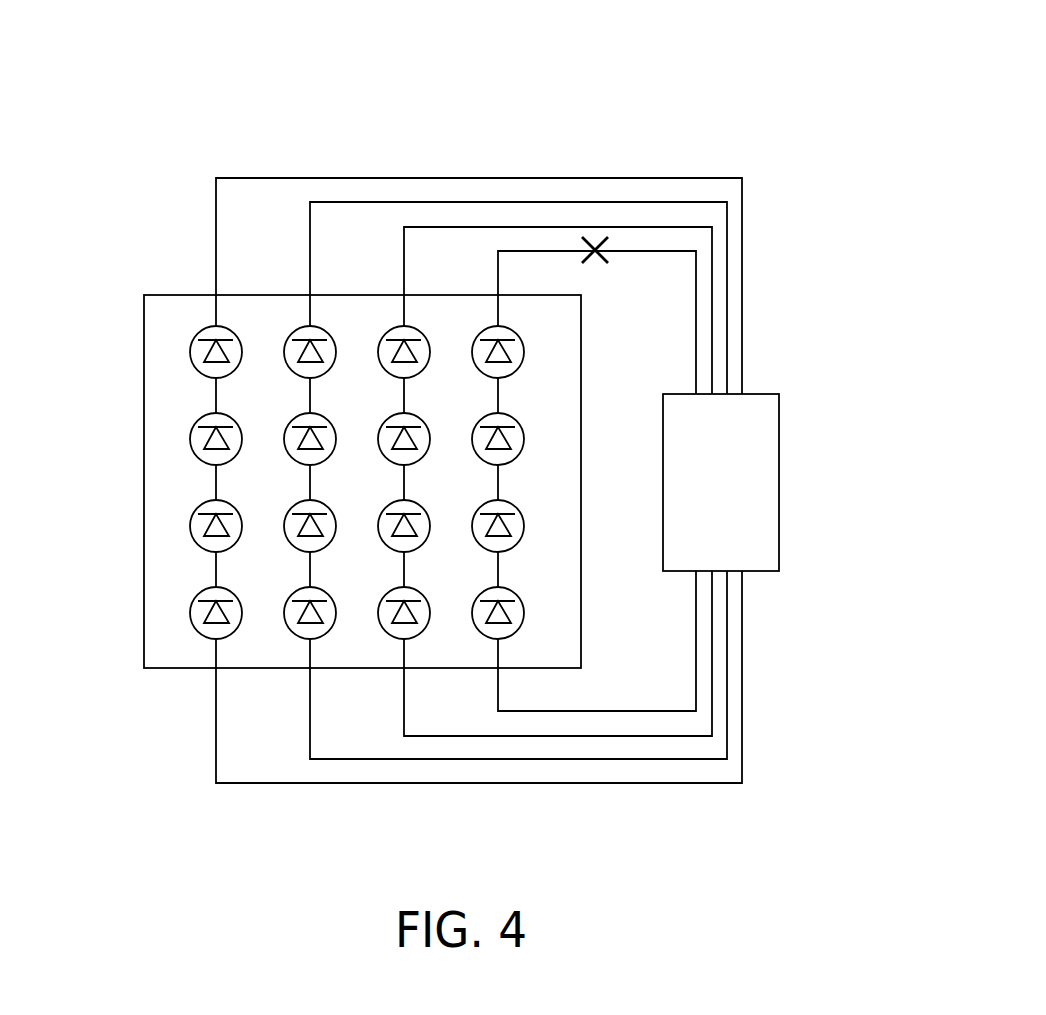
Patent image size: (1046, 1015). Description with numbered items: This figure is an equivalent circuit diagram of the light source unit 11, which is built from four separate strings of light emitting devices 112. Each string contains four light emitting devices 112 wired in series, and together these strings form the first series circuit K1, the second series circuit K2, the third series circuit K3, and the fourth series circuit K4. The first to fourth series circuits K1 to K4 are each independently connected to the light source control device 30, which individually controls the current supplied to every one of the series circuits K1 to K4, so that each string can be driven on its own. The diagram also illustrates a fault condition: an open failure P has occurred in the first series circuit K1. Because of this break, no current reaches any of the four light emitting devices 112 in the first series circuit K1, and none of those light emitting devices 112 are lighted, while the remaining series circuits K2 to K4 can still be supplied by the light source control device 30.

The light source unit 11 is at (734, 107).
The fourth series circuit K4 is at (233, 169).
The third series circuit K3 is at (332, 200).
The second series circuit K2 is at (433, 224).
The first series circuit K1 is at (526, 244).
The open failure P is at (623, 241).
The light emitting device 112 is at (190, 342).
The light source control device 30 is at (779, 487).